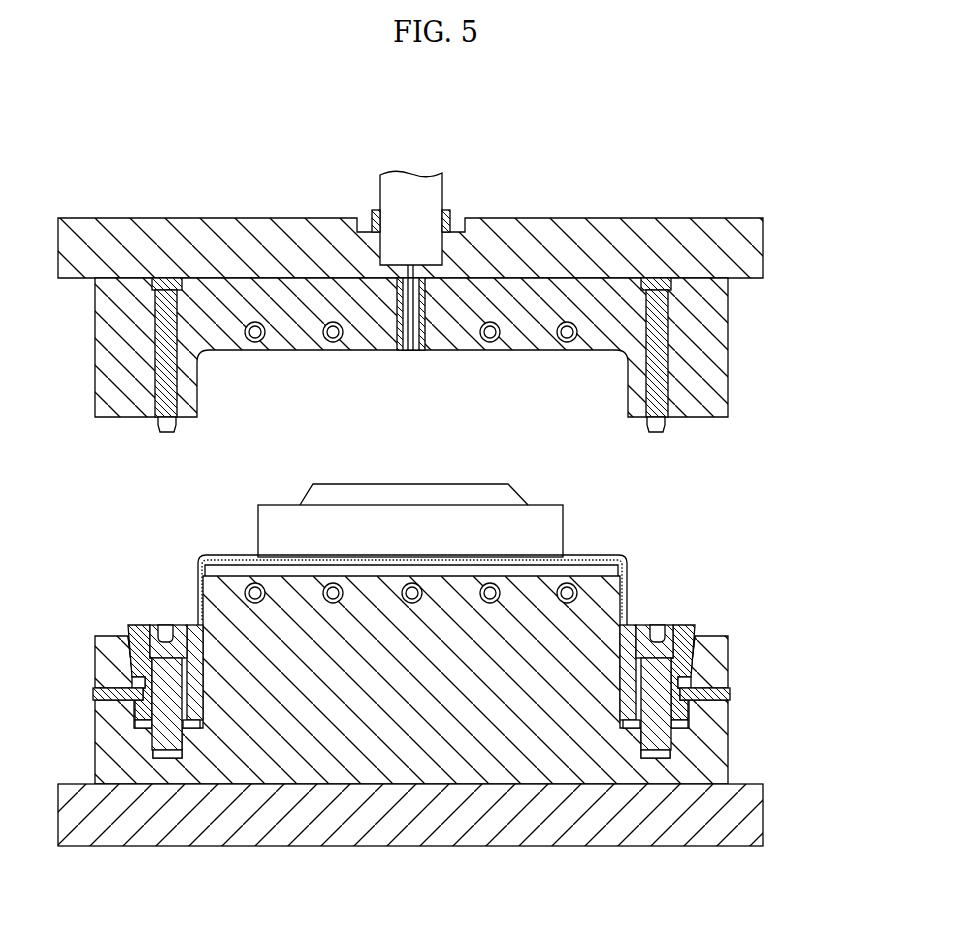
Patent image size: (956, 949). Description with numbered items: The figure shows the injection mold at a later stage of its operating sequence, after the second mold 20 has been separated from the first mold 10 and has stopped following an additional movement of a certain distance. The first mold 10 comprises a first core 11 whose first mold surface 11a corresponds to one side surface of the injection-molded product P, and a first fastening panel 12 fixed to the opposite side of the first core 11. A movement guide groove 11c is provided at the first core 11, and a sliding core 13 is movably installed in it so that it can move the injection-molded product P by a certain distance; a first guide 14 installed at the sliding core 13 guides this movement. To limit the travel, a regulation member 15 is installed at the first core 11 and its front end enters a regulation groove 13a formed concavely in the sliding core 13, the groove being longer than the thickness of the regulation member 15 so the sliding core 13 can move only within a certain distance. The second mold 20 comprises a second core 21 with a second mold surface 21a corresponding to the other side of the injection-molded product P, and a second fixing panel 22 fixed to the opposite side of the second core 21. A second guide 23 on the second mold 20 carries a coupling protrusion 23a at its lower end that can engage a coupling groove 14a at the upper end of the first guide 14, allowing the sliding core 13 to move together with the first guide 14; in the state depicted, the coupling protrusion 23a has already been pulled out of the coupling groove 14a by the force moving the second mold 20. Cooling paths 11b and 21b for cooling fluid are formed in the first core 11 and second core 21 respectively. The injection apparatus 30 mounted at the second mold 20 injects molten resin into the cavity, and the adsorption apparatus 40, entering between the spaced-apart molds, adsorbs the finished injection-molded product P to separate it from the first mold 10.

The first mold 10 is at (432, 728).
The first core 11 is at (728, 757).
The first mold surface 11a is at (293, 576).
The cooling path 11b is at (489, 602).
The movement guide groove 11c is at (130, 650).
The first fastening panel 12 is at (752, 812).
The sliding core 13 is at (135, 624).
The regulation groove 13a is at (138, 682).
The first guide 14 is at (152, 627).
The coupling groove 14a is at (170, 627).
The regulation member 15 is at (95, 692).
The second mold 20 is at (445, 298).
The second core 21 is at (728, 313).
The second mold surface 21a is at (445, 350).
The cooling path 21b is at (497, 340).
The second fixing panel 22 is at (746, 218).
The second guide 23 is at (162, 353).
The coupling protrusion 23a is at (162, 432).
The injection apparatus 30 is at (458, 205).
The adsorption apparatus 40 is at (298, 500).
The injection-molded product P is at (224, 556).